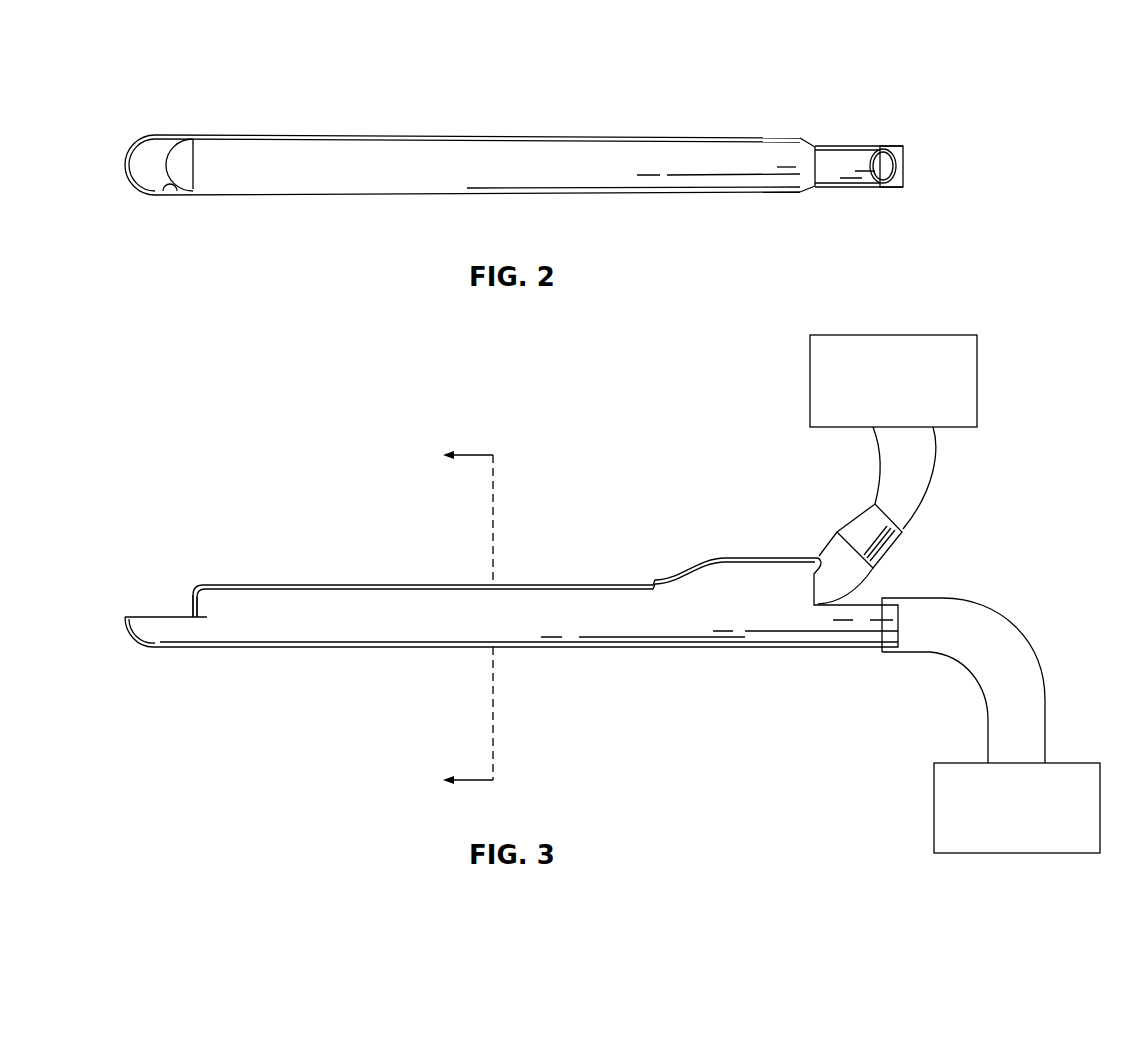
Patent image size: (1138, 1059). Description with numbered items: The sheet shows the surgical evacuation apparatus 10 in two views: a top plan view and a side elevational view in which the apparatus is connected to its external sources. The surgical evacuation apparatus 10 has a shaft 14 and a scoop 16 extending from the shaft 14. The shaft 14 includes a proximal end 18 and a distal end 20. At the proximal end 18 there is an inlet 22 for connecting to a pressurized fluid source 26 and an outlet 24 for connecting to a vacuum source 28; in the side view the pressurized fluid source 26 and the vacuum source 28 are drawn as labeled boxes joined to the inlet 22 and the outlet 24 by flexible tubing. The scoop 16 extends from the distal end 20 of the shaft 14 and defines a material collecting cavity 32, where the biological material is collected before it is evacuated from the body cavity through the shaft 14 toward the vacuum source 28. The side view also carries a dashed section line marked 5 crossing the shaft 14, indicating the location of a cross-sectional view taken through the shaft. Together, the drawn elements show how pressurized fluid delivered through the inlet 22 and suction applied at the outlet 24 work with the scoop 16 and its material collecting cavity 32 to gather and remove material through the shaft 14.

In FIG. 3, the section line 5- 5 is at (458, 617).
In FIG. 2, the surgical evacuation apparatus 10 is at (262, 35).
In FIG. 3, the surgical evacuation apparatus 10 is at (222, 510).
In FIG. 2, the shaft 14 is at (530, 137).
In FIG. 3, the shaft 14 is at (396, 585).
In FIG. 2, the scoop 16 is at (178, 135).
In FIG. 3, the scoop 16 is at (135, 615).
In FIG. 2, the proximal end 18 is at (803, 138).
In FIG. 2, the distal end 20 is at (188, 157).
In FIG. 3, the distal end 20 is at (192, 598).
In FIG. 2, the inlet 22 is at (883, 146).
In FIG. 3, the inlet 22 is at (905, 527).
In FIG. 3, the outlet 24 is at (903, 640).
In FIG. 3, the pressurized fluid source 26 is at (977, 380).
In FIG. 3, the vacuum source 28 is at (1027, 853).
In FIG. 2, the material collecting cavity 32 is at (178, 196).